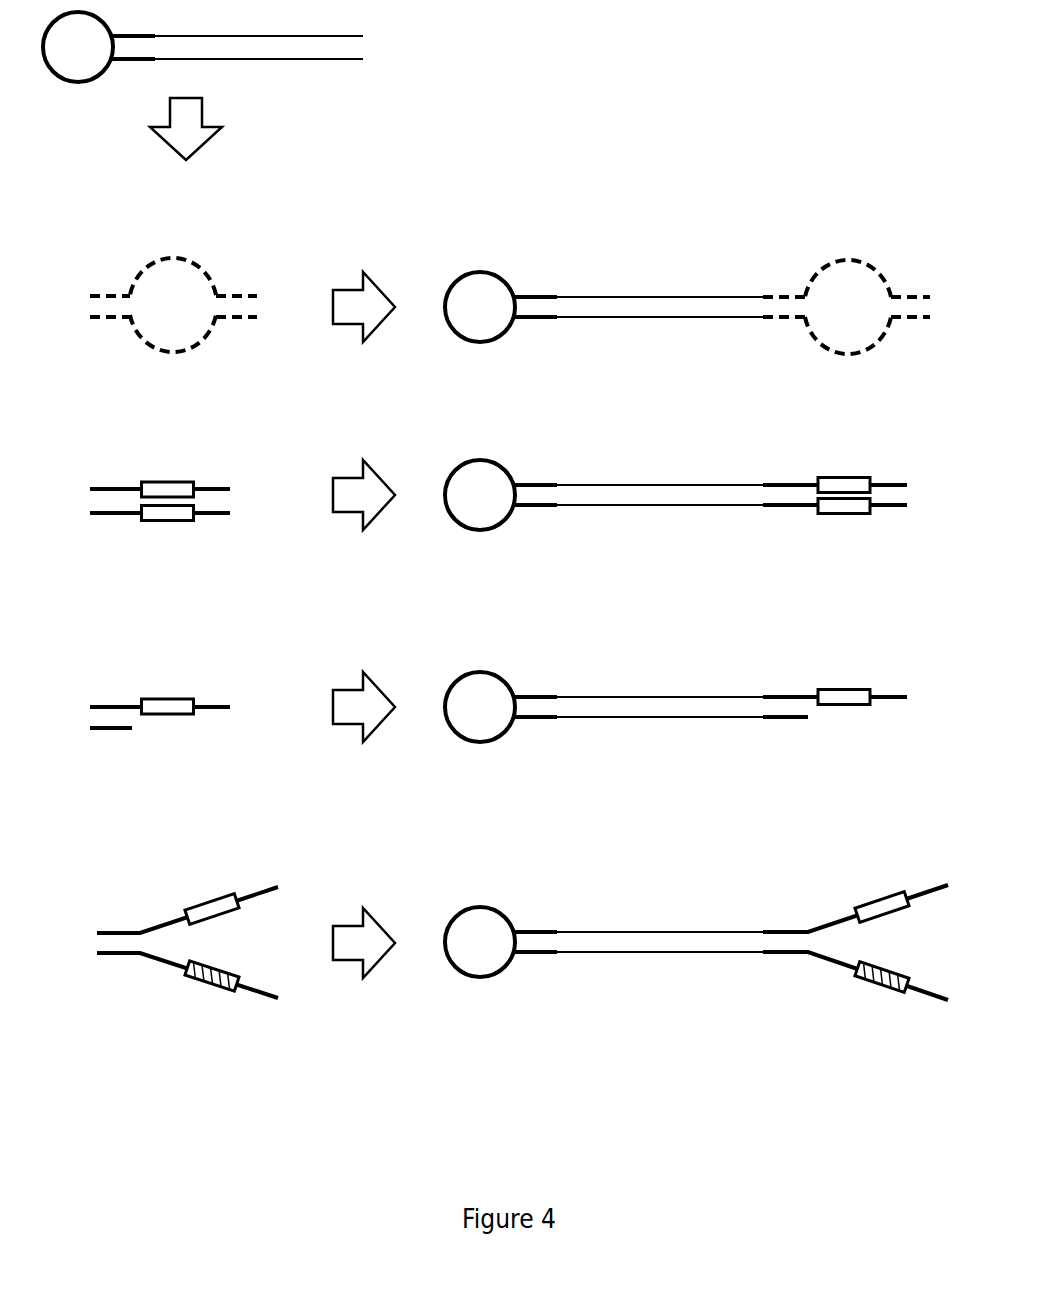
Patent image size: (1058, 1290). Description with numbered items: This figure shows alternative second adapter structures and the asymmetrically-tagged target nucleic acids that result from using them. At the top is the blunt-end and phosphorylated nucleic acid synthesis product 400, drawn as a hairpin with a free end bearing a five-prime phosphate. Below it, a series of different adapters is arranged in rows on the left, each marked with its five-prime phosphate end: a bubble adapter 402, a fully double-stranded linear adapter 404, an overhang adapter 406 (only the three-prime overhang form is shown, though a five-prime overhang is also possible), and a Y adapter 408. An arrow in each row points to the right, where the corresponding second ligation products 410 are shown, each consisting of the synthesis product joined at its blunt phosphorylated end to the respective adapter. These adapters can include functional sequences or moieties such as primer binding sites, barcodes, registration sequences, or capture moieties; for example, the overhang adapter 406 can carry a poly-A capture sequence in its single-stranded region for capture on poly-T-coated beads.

The nucleic acid synthesis product 400 is at (437, 18).
The bubble adapter 402 is at (208, 252).
The fully double-stranded linear adapter 404 is at (208, 450).
The overhang adapter 406 is at (202, 672).
The Y adapter 408 is at (225, 857).
The second ligation products 410 is at (958, 238).